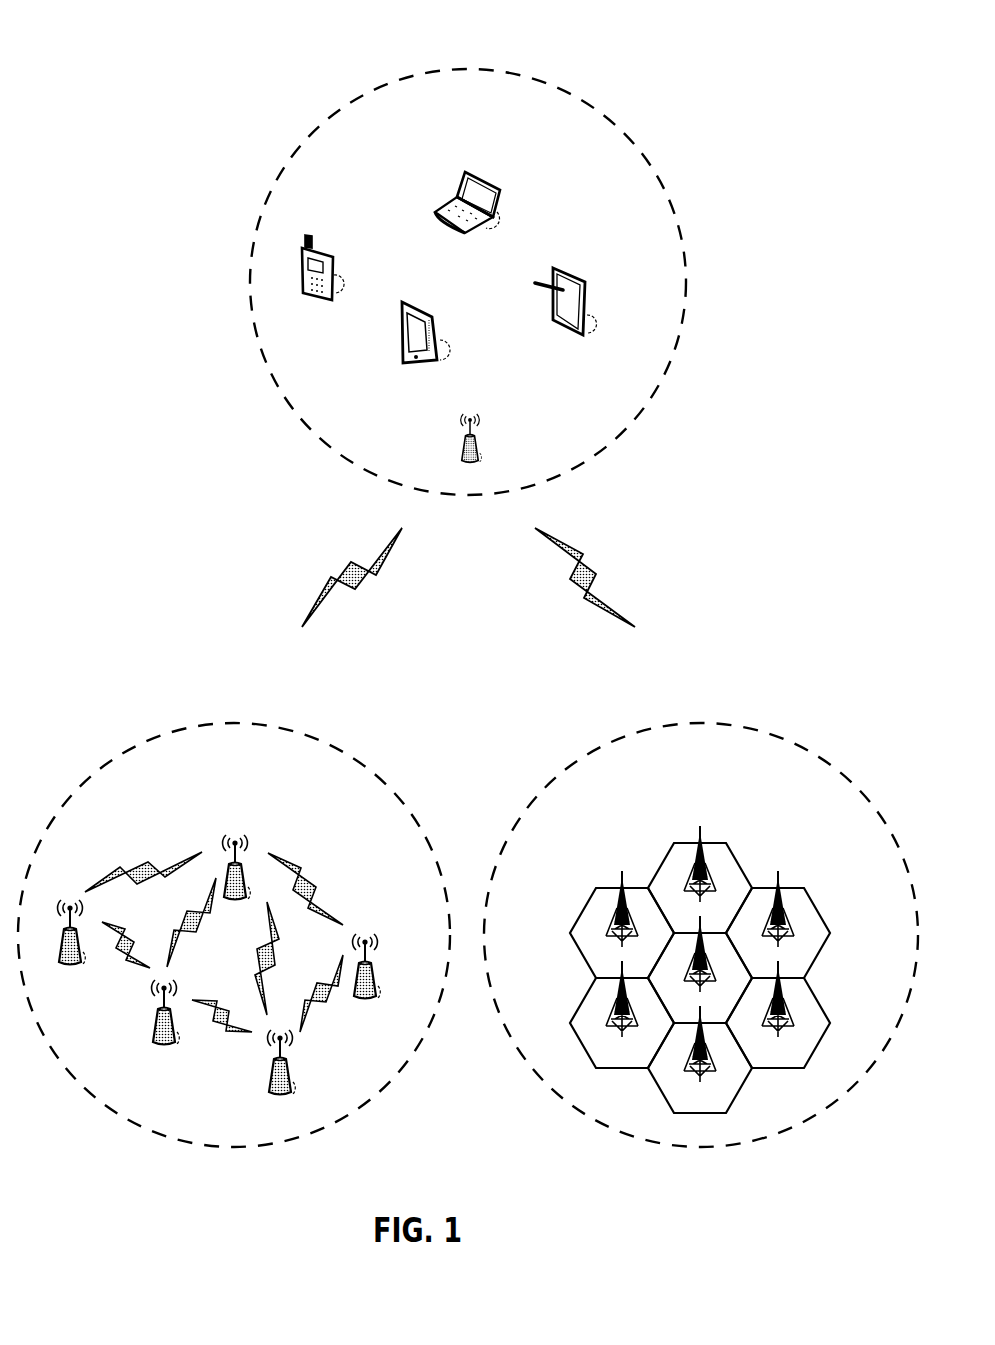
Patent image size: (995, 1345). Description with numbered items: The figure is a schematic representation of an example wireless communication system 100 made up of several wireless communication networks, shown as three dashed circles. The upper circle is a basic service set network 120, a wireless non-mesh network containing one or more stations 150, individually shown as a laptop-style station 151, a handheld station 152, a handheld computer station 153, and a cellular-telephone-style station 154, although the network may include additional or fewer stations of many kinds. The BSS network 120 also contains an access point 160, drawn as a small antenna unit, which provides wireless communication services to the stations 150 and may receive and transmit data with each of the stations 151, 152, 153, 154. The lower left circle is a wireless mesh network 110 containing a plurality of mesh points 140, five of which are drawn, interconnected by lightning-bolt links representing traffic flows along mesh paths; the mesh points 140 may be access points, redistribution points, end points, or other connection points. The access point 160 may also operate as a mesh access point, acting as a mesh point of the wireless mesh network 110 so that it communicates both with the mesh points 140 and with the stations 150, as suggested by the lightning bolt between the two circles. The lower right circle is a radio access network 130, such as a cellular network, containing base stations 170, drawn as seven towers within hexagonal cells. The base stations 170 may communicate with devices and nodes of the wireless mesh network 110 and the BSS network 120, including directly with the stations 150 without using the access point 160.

The wireless communication system 100 is at (113, 60).
The wireless mesh network 110 is at (237, 723).
The basic service set network 120 is at (470, 70).
The radio access network 130 is at (702, 722).
The mesh points 140 is at (225, 792).
The stations 150 is at (426, 143).
The station 151 is at (462, 173).
The station 152 is at (557, 268).
The station 153 is at (405, 300).
The station 154 is at (323, 248).
The access point 160 is at (478, 455).
The base stations 170 is at (692, 792).